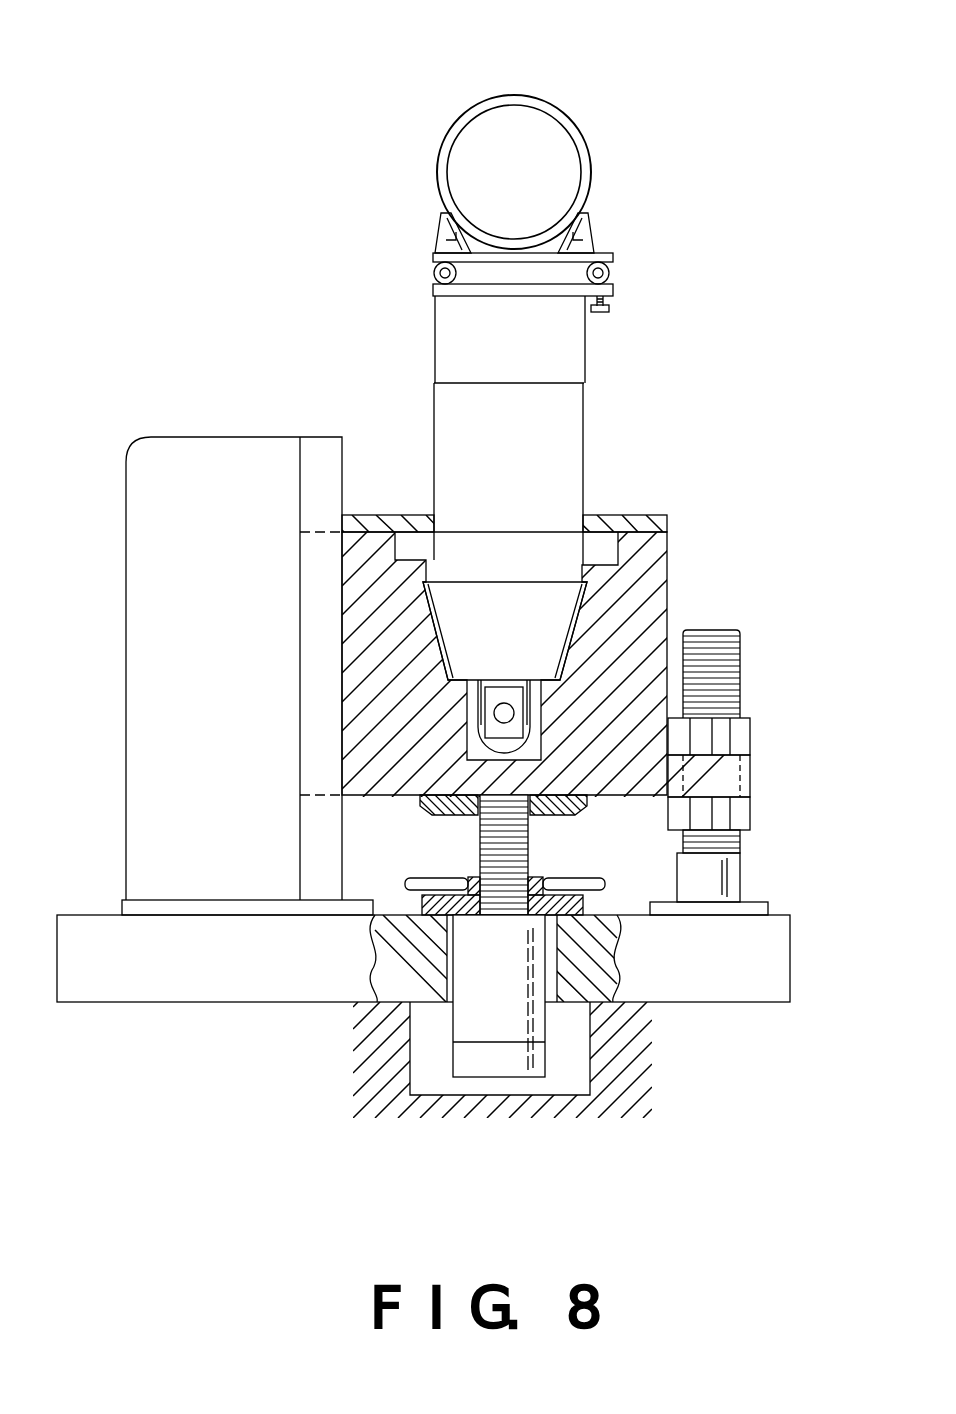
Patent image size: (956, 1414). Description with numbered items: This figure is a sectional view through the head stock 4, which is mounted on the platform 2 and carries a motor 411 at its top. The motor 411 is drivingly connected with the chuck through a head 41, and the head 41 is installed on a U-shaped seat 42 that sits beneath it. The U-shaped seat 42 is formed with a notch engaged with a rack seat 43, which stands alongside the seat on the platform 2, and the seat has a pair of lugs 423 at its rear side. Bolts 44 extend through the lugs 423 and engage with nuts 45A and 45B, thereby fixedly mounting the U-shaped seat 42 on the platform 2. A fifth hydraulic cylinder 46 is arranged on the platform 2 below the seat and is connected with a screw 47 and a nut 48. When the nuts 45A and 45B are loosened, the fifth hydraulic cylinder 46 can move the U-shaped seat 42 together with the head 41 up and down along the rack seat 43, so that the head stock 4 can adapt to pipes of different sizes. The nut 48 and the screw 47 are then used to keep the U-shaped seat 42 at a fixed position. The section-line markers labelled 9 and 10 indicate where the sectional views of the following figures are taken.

The platform 2 is at (92, 915).
The head stock 4 is at (414, 268).
The section line 9 is at (515, 63).
The section line 10 is at (95, 595).
The head 41 is at (583, 462).
The motor 411 is at (578, 129).
The U-shaped seat 42 is at (668, 571).
The lugs 423 is at (752, 777).
The rack seat 43 is at (233, 437).
The bolts 44 is at (740, 694).
The nut 45A is at (752, 740).
The nut 45B is at (752, 814).
The fifth hydraulic cylinder 46 is at (453, 1066).
The screw 47 is at (530, 843).
The nut 48 is at (470, 878).